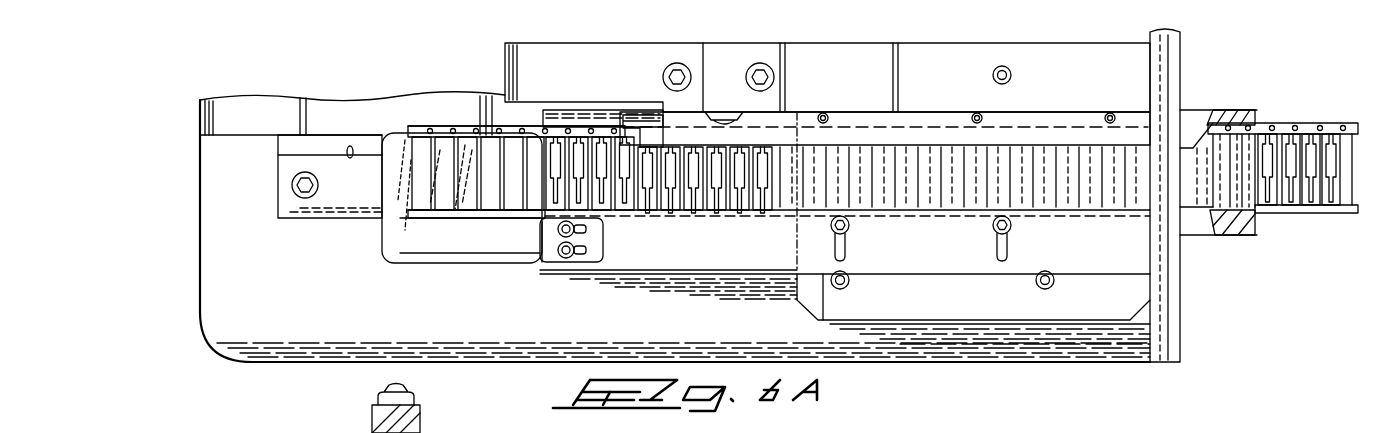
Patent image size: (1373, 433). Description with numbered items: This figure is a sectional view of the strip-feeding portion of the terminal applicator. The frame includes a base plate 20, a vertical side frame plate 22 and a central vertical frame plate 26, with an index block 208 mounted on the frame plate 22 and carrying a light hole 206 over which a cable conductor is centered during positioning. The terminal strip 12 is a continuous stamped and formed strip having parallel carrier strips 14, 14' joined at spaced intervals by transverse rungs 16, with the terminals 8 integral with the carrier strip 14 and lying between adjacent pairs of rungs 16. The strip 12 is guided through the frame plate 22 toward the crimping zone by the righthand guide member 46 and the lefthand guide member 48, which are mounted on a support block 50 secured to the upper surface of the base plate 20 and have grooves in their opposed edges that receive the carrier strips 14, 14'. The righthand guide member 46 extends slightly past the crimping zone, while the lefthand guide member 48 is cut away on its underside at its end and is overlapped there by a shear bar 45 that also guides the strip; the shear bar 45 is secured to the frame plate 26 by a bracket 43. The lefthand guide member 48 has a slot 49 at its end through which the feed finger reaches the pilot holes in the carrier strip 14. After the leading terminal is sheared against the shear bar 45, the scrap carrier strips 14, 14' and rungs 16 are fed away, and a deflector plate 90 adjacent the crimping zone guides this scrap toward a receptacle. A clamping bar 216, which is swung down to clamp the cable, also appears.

The base plate 20 is at (223, 323).
The index block 208 is at (290, 172).
The light hole 206 is at (350, 146).
The deflector plate 90 is at (390, 240).
The rungs 16 is at (430, 167).
The carrier strip 14 is at (883, 143).
The terminal strip 12 is at (473, 122).
The carrier strip 14' is at (476, 257).
The terminals 8 is at (648, 173).
The central vertical frame plate 26 is at (1128, 72).
The shear bar 45 is at (565, 116).
The slot 49 is at (632, 128).
The bracket 43 is at (727, 112).
The lefthand guide member 48 is at (927, 130).
The righthand guide member 46 is at (702, 260).
The support block 50 is at (973, 307).
The vertical side frame plate 22 is at (1173, 318).
The clamping bar 216 is at (412, 420).